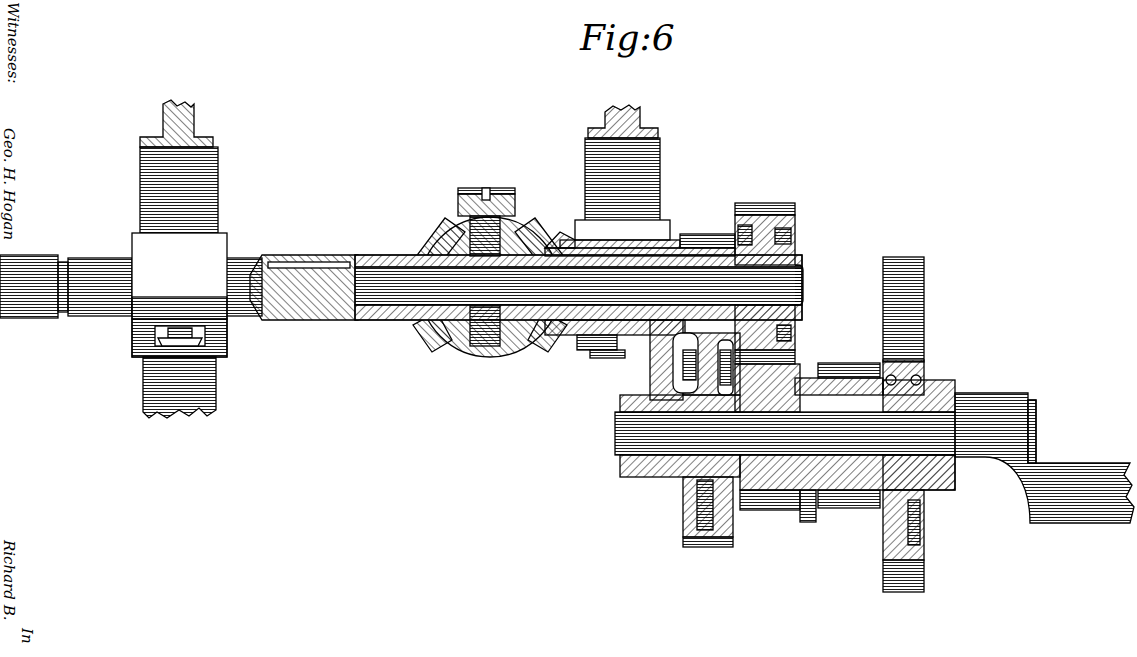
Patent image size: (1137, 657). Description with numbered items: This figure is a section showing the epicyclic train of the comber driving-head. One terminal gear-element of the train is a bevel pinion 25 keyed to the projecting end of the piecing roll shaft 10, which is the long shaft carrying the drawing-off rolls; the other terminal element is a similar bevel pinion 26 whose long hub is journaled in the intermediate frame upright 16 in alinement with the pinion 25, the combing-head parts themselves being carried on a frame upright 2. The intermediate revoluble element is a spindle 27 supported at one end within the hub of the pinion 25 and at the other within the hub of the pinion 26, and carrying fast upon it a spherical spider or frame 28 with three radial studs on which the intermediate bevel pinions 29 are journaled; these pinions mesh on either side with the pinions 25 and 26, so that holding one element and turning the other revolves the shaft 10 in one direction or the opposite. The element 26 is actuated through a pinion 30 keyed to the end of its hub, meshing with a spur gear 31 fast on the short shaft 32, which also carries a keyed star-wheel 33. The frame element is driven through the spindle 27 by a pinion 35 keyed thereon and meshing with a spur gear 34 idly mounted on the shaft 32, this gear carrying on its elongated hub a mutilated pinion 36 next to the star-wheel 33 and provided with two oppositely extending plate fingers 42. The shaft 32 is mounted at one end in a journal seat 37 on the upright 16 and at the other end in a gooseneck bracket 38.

The frame uprights 2 is at (216, 187).
The piecing roll shaft 10 is at (30, 257).
The intermediate frame upright 16 is at (648, 158).
The bevel pinion 25 is at (335, 320).
The bevel pinion 26 is at (528, 342).
The spindle 27 is at (455, 332).
The spider or frame 28 is at (497, 356).
The intermediate bevel pinions 29 is at (514, 210).
The pinion 30 is at (690, 240).
The spur gear 31 is at (696, 548).
The short shaft 32 is at (614, 440).
The star-wheel 33 is at (918, 283).
The spur gear 34 is at (787, 512).
The pinion 35 is at (798, 240).
The mutilated pinion 36 is at (860, 510).
The journal seat 37 is at (648, 478).
The gooseneck bracket 38 is at (1052, 462).
The plate fingers 42 is at (810, 522).